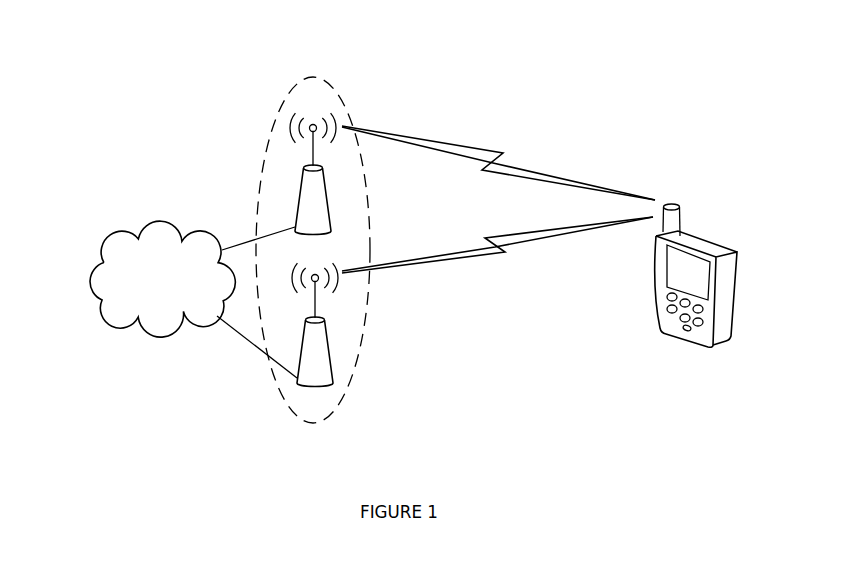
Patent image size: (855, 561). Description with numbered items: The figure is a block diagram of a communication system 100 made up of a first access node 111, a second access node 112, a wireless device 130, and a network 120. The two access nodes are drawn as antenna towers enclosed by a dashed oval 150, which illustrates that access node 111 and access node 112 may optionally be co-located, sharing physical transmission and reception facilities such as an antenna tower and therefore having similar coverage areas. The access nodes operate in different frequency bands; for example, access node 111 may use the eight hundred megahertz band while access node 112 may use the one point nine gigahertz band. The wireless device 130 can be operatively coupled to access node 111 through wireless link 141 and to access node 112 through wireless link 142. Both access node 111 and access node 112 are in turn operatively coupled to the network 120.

The communication system 100 is at (73, 37).
The access node 111 is at (331, 232).
The access node 112 is at (333, 383).
The network 120 is at (176, 298).
The wireless device 130 is at (722, 332).
The wireless link 141 is at (502, 153).
The wireless link 142 is at (497, 258).
The dashed oval 150 is at (326, 421).